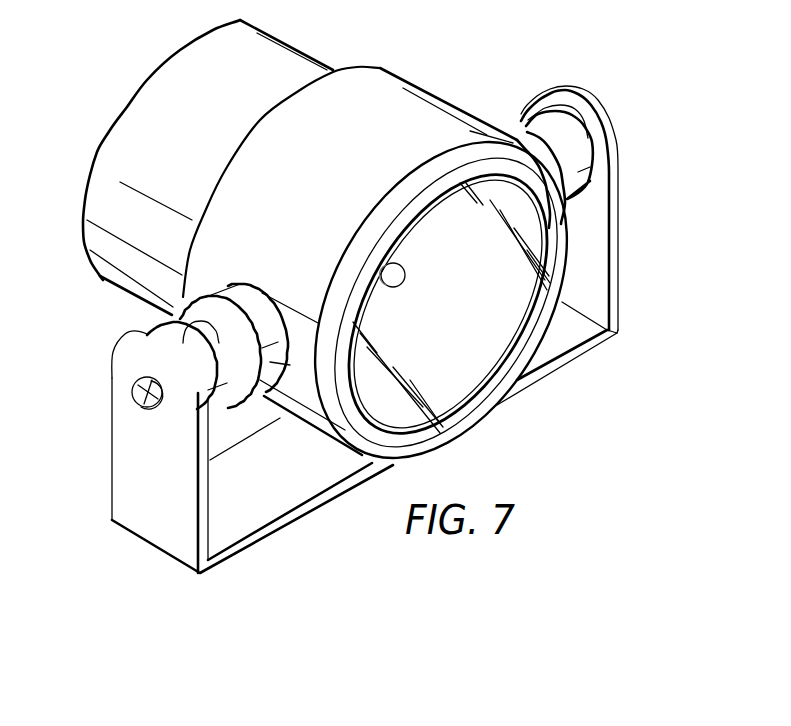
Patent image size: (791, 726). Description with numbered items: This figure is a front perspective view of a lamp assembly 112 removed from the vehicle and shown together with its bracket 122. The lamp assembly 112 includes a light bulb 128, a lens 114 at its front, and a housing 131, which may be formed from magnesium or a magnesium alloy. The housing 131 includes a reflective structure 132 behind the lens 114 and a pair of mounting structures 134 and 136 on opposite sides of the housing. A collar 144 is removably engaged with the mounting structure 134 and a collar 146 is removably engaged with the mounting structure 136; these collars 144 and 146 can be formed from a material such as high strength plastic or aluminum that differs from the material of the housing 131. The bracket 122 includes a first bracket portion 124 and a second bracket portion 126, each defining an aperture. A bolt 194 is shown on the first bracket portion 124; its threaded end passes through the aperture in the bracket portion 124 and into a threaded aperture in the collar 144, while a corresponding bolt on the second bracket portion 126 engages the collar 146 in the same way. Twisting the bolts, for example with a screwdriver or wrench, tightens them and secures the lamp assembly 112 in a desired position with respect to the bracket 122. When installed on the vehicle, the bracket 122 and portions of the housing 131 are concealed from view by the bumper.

The lamp assembly 112 is at (462, 60).
The lens 114 is at (503, 333).
The bracket 122 is at (82, 505).
The bracket portion 124 is at (122, 435).
The bracket portion 126 is at (613, 230).
The light bulb 128 is at (405, 277).
The housing 131 is at (406, 66).
The reflective structure 132 is at (287, 147).
The mounting structure 134 is at (217, 327).
The mounting structure 136 is at (518, 135).
The collar 144 is at (200, 428).
The collar 146 is at (551, 126).
The bolt 194 is at (128, 392).